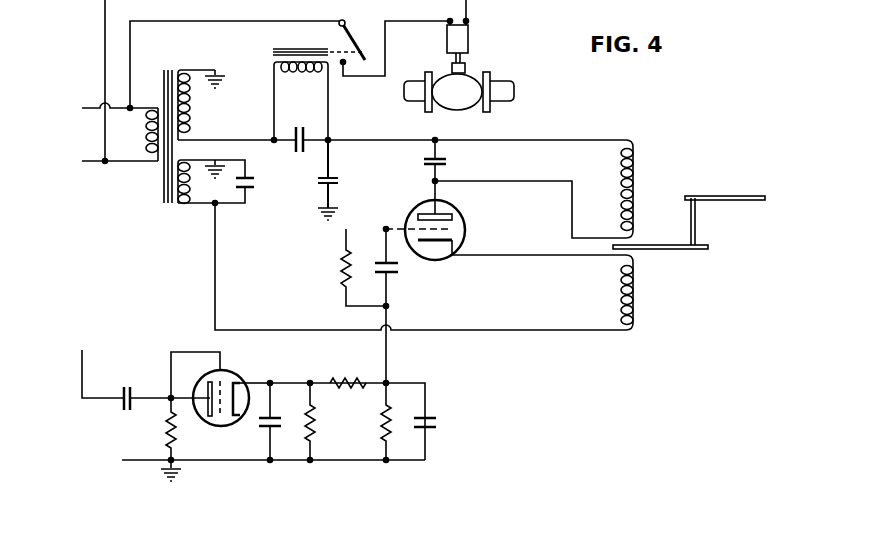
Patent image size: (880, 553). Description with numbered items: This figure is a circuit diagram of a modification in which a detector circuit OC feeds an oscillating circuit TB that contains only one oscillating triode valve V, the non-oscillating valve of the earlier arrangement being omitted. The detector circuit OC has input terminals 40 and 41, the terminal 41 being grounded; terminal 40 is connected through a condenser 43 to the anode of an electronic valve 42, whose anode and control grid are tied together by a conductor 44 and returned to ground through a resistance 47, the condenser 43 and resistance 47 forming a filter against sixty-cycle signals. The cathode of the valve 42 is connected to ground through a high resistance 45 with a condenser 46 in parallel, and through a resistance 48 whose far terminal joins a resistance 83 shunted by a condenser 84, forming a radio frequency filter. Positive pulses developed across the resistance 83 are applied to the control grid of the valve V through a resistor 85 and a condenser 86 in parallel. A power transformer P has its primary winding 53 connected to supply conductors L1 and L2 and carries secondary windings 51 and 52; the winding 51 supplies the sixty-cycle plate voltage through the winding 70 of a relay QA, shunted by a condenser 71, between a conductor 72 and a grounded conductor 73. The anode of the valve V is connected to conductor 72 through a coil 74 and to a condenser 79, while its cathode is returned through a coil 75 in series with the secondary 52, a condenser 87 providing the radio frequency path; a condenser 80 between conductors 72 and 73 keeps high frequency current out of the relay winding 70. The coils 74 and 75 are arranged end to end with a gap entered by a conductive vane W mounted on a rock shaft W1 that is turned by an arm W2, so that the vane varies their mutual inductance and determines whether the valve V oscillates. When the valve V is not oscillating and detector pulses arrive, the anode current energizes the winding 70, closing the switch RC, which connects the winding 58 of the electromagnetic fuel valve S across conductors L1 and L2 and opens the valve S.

The input terminal 40 is at (83, 366).
The input terminal 41 is at (122, 460).
The electronic valve 42 is at (245, 371).
The condenser 43 is at (130, 390).
The conductor 44 is at (221, 357).
The high resistance 45 is at (316, 418).
The condenser 46 is at (279, 396).
The resistance 47 is at (167, 440).
The resistance 48 is at (337, 387).
The secondary winding 51 is at (184, 119).
The secondary winding 52 is at (186, 178).
The primary winding 53 is at (151, 135).
The winding 58 is at (469, 45).
The relay winding 70 is at (288, 72).
The condenser 71 is at (293, 147).
The conductor 72 is at (553, 140).
The conductor 73 is at (223, 77).
The coil 74 is at (626, 190).
The coil 75 is at (625, 296).
The condenser 79 is at (448, 161).
The condenser 80 is at (337, 184).
The resistance 83 is at (389, 412).
The condenser 84 is at (437, 423).
The resistor 85 is at (340, 272).
The condenser 86 is at (399, 268).
The condenser 87 is at (254, 180).
The power transformer P is at (158, 209).
The oscillating circuit TB is at (206, 263).
The relay QA is at (262, 54).
The switch RC is at (346, 24).
The electromagnetic fuel valve S is at (455, 109).
The triode valve V is at (453, 212).
The vane W is at (659, 250).
The rock shaft W1 is at (696, 236).
The arm W2 is at (712, 196).
The supply conductor L1 is at (94, 108).
The supply conductor L2 is at (94, 161).
The detector circuit OC is at (345, 465).